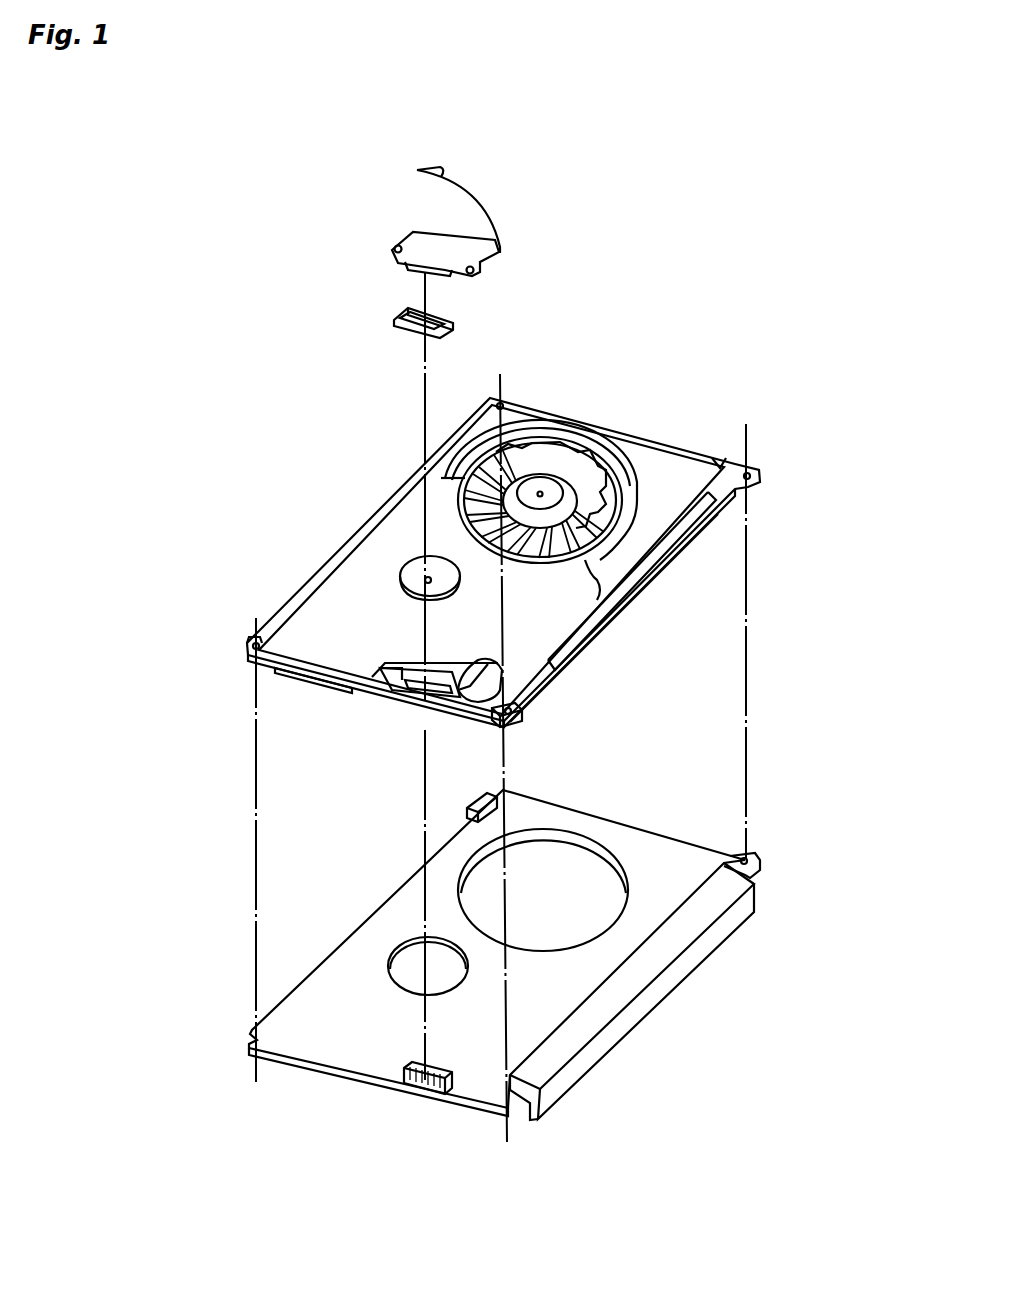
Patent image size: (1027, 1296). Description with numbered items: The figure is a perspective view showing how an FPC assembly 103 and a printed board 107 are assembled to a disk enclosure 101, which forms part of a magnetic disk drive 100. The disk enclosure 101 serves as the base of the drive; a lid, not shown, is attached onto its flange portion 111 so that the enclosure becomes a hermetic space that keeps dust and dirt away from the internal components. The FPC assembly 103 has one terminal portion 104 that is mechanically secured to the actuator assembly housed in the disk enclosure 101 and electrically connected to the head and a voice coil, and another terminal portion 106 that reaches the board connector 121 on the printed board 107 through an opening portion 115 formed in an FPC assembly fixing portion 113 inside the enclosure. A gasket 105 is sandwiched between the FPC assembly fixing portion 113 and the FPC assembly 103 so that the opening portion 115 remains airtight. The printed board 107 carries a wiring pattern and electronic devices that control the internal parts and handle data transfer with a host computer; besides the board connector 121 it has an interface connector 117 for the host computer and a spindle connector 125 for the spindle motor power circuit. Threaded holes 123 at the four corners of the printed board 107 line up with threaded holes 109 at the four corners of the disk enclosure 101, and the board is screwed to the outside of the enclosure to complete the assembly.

The magnetic disk drive 100 is at (656, 418).
The disk enclosure 101 is at (562, 602).
The FPC assembly 103 is at (506, 246).
The one terminal portion 104 is at (422, 163).
The gasket 105 is at (455, 320).
The other terminal portion 106 is at (410, 269).
The printed board 107 is at (691, 982).
The threaded holes 109 is at (518, 700).
The flange portion 111 is at (637, 560).
The FPC assembly fixing portion 113 is at (463, 681).
The opening portion 115 is at (423, 684).
The interface connector 117 is at (612, 1000).
The board connector 121 is at (422, 1094).
The threaded holes 123 is at (752, 856).
The spindle connector 125 is at (480, 797).